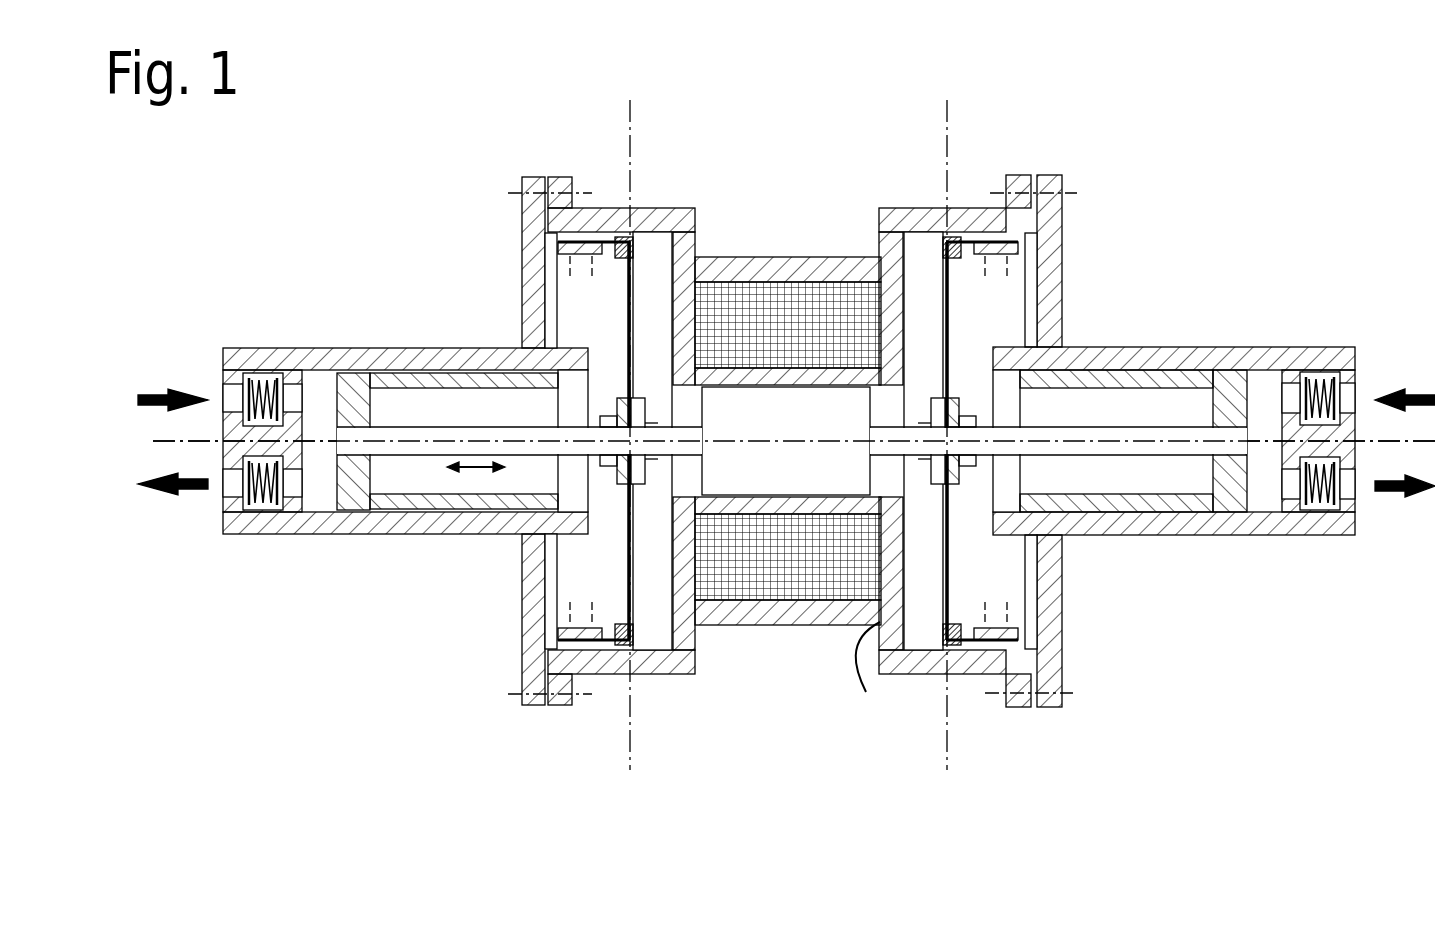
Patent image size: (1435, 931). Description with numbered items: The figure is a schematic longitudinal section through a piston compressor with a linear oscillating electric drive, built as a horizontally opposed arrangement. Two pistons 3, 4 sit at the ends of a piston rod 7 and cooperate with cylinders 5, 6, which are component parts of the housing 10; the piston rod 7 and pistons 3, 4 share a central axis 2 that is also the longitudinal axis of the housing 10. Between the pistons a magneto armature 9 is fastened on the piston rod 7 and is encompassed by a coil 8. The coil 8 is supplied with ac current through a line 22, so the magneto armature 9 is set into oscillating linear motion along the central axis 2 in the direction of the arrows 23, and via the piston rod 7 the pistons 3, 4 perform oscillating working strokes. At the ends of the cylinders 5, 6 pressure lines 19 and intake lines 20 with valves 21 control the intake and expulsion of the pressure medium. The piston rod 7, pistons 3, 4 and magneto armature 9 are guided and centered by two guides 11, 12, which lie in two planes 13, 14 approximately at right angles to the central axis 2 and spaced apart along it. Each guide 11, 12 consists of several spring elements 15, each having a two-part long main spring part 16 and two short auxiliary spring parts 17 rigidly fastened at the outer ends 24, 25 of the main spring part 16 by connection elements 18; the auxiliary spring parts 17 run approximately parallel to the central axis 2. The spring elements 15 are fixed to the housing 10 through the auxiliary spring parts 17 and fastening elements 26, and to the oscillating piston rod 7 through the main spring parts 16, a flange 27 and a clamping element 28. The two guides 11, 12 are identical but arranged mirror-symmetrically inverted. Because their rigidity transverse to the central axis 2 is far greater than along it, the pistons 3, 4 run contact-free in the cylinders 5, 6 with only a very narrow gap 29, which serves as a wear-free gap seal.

The central axis 2 is at (803, 447).
The piston 3 is at (1206, 510).
The piston 4 is at (357, 483).
The cylinder 5 is at (1280, 515).
The cylinder 6 is at (303, 520).
The piston rod 7 is at (442, 432).
The coil 8 is at (838, 318).
The magneto armature 9 is at (725, 450).
The housing 10 is at (733, 265).
The guide 11 is at (930, 297).
The guide 12 is at (643, 288).
The plane 13 is at (951, 128).
The plane 14 is at (627, 128).
The spring element 15 is at (950, 335).
The main spring part 16 is at (950, 533).
The auxiliary spring part 17 is at (970, 648).
The connection element 18 is at (935, 648).
The pressure line 19 is at (223, 495).
The intake line 20 is at (225, 393).
The valve 21 is at (248, 376).
The line 22 is at (873, 678).
The arrows 23 is at (472, 472).
The outer end of main spring part 24 is at (950, 275).
The outer end of main spring part 25 is at (957, 597).
The fastening element 26 is at (1017, 250).
The flange 27 is at (635, 478).
The clamping element 28 is at (625, 480).
The gap 29 is at (428, 515).